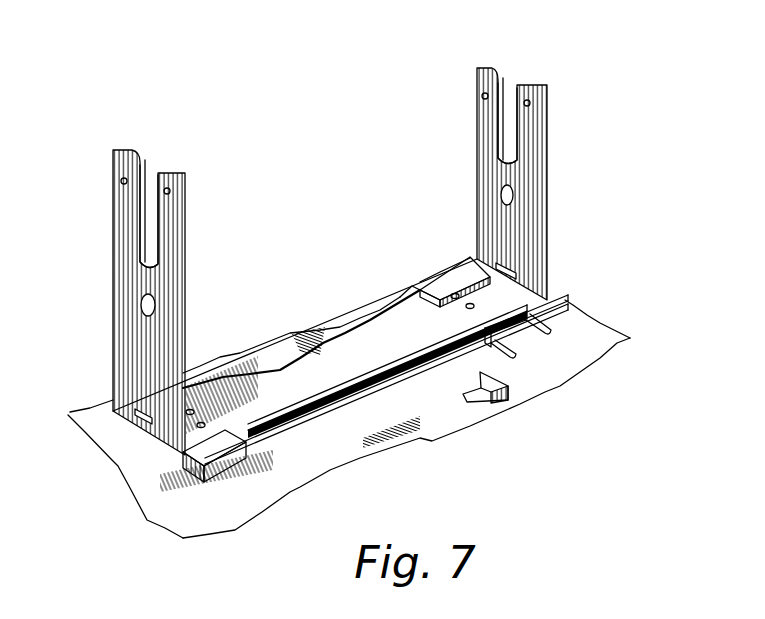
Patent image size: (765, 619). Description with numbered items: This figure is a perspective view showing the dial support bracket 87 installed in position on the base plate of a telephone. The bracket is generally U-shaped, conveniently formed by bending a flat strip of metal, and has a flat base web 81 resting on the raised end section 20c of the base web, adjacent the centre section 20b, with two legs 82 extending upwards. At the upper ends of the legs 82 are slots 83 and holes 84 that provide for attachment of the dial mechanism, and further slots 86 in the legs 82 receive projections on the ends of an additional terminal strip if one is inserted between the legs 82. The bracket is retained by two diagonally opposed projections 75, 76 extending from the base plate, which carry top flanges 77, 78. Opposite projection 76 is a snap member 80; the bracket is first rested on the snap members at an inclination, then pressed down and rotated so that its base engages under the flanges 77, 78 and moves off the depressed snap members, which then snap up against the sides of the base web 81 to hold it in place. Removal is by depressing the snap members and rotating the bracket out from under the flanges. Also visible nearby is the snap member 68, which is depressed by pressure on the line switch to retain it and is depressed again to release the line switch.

The centre section of base web 20b is at (573, 350).
The end section of base web 20c is at (344, 325).
The snap member 68 is at (472, 392).
The projection 75 is at (227, 460).
The projection 76 is at (421, 290).
The top flange 77 is at (183, 455).
The top flange 78 is at (455, 280).
The snap member 80 is at (567, 311).
The base web 81 is at (365, 375).
The legs 82 is at (120, 305).
The slots 83 is at (148, 185).
The holes 84 is at (120, 181).
The slots 86 is at (139, 420).
The dial support bracket 87 is at (556, 295).